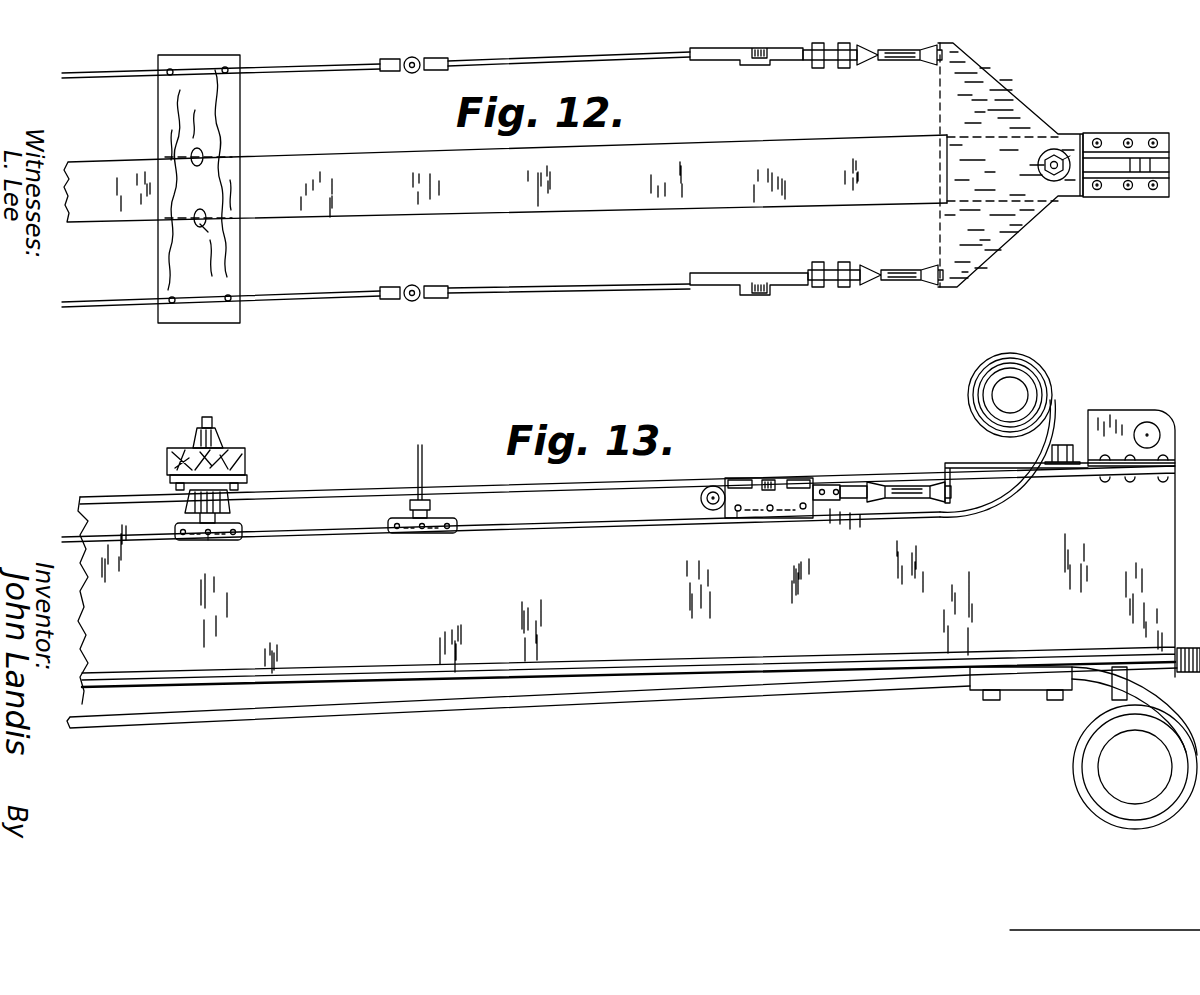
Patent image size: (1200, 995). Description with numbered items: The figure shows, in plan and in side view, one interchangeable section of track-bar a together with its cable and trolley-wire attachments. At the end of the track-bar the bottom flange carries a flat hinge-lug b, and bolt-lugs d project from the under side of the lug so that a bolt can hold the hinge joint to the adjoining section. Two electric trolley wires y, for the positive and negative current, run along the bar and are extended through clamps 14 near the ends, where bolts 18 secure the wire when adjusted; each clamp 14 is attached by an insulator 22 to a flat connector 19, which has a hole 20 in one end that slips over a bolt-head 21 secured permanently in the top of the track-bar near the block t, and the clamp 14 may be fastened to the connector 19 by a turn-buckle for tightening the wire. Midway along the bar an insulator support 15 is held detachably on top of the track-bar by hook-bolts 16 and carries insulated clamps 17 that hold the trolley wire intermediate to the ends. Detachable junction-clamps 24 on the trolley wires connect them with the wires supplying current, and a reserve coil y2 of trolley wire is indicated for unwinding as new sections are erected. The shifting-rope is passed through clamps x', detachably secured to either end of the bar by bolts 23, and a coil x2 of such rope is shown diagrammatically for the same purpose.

In FIG. 12, the clamp 14 is at (757, 48).
In FIG. 13, the clamp 14 is at (780, 516).
In FIG. 12, the insulator support 15 is at (243, 133).
In FIG. 13, the insulator support 15 is at (246, 457).
In FIG. 12, the hook-bolt 16 is at (199, 227).
In FIG. 13, the hook-bolt 16 is at (217, 433).
In FIG. 13, the insulated clamp 17 is at (243, 523).
In FIG. 13, the bolt 18 is at (208, 533).
In FIG. 12, the flat connector 19 is at (997, 232).
In FIG. 13, the flat connector 19 is at (972, 463).
In FIG. 12, the hole 20 is at (1036, 164).
In FIG. 12, the bolt-head 21 is at (1062, 158).
In FIG. 13, the bolt-head 21 is at (1062, 445).
In FIG. 12, the insulator 22 is at (897, 63).
In FIG. 13, the bolt 23 is at (983, 701).
In FIG. 12, the junction-clamp 24 is at (414, 288).
In FIG. 13, the junction-clamp 24 is at (453, 521).
In FIG. 12, the track-bar section a is at (573, 208).
In FIG. 13, the track-bar section a is at (437, 654).
In FIG. 13, the hinge-lug b is at (1193, 645).
In FIG. 13, the bolt-lug d is at (1110, 700).
In FIG. 12, the block t is at (1113, 152).
In FIG. 13, the block t is at (1113, 409).
In FIG. 13, the clamp x' is at (622, 700).
In FIG. 13, the coil of shifting-rope x2 is at (1072, 764).
In FIG. 12, the trolley wire y is at (342, 75).
In FIG. 13, the trolley wire y is at (547, 535).
In FIG. 13, the coil of trolley wire y2 is at (968, 390).